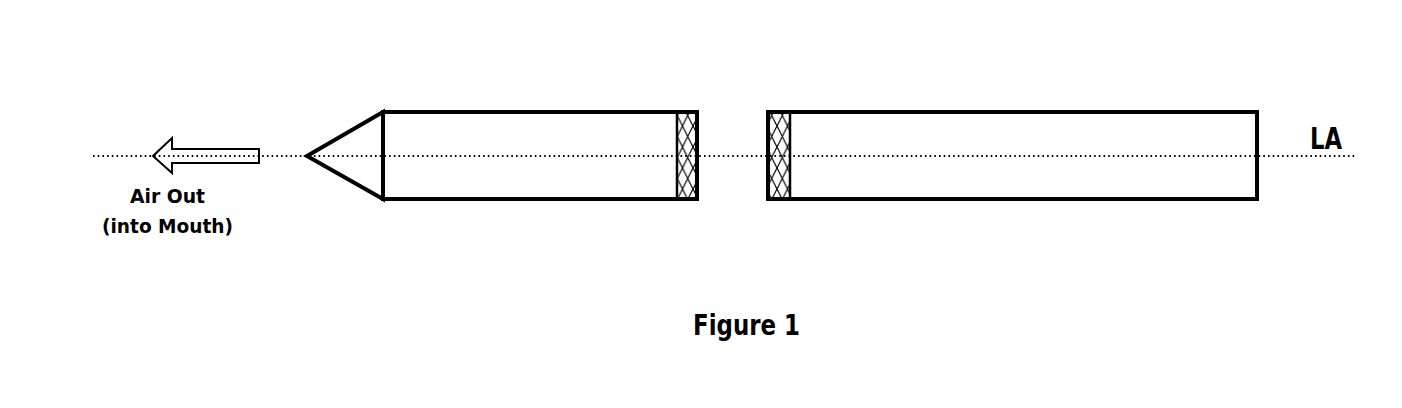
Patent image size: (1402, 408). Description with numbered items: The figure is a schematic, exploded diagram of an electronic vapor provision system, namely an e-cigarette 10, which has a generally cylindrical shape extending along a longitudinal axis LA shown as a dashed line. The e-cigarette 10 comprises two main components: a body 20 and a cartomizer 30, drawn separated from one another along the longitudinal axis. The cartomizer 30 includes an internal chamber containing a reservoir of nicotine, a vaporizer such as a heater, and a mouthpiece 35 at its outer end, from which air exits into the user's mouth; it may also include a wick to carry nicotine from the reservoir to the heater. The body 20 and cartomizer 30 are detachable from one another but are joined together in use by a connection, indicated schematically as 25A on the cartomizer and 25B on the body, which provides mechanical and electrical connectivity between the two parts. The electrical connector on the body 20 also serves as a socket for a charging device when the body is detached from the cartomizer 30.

The e-cigarette 10 is at (763, 180).
The body 20 is at (1040, 189).
The connection 25A is at (635, 189).
The connection 25B is at (986, 113).
The cartomizer 30 is at (540, 127).
The mouthpiece 35 is at (299, 121).